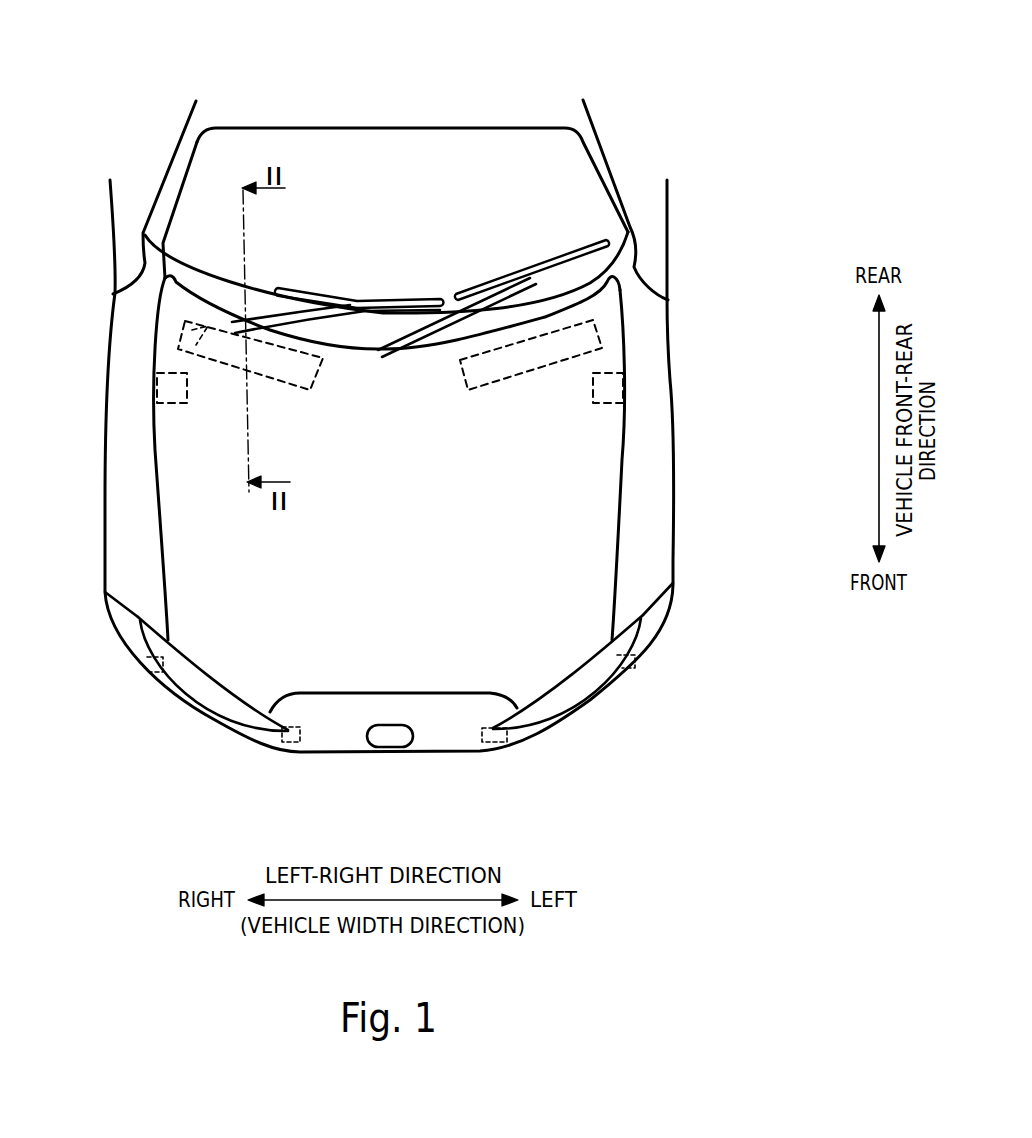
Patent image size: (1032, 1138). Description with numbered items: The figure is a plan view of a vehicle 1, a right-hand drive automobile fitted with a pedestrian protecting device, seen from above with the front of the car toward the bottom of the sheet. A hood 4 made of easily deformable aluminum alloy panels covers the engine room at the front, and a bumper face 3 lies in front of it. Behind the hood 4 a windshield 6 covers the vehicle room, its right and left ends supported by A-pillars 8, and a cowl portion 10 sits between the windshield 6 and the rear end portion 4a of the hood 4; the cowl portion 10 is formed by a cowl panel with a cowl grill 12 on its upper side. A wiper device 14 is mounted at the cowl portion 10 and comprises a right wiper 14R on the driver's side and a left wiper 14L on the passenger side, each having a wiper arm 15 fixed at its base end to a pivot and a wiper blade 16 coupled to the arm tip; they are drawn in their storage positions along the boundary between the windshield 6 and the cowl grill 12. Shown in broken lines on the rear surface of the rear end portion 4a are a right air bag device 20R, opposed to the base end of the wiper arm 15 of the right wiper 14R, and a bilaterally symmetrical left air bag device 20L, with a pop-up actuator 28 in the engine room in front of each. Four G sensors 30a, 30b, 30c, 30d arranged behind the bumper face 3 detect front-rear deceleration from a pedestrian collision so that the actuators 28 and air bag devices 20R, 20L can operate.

The vehicle 1 is at (634, 81).
The bumper face 3 is at (343, 733).
The hood 4 is at (598, 507).
The rear end portion 4a is at (352, 380).
The windshield 6 is at (428, 160).
The A-pillar 8 is at (180, 163).
The cowl portion 10 is at (580, 297).
The cowl grill 12 is at (390, 295).
The wiper device 14 is at (420, 264).
The right wiper 14R is at (385, 219).
The left wiper 14L is at (560, 219).
The wiper arm 15 is at (262, 318).
The wiper blade 16 is at (387, 293).
The right air bag device 20R is at (180, 325).
The left air bag device 20L is at (603, 337).
The pop-up actuator 28 is at (158, 373).
The G sensor 30a is at (148, 667).
The G sensor 30b is at (296, 727).
The G sensor 30c is at (517, 740).
The G sensor 30d is at (643, 660).